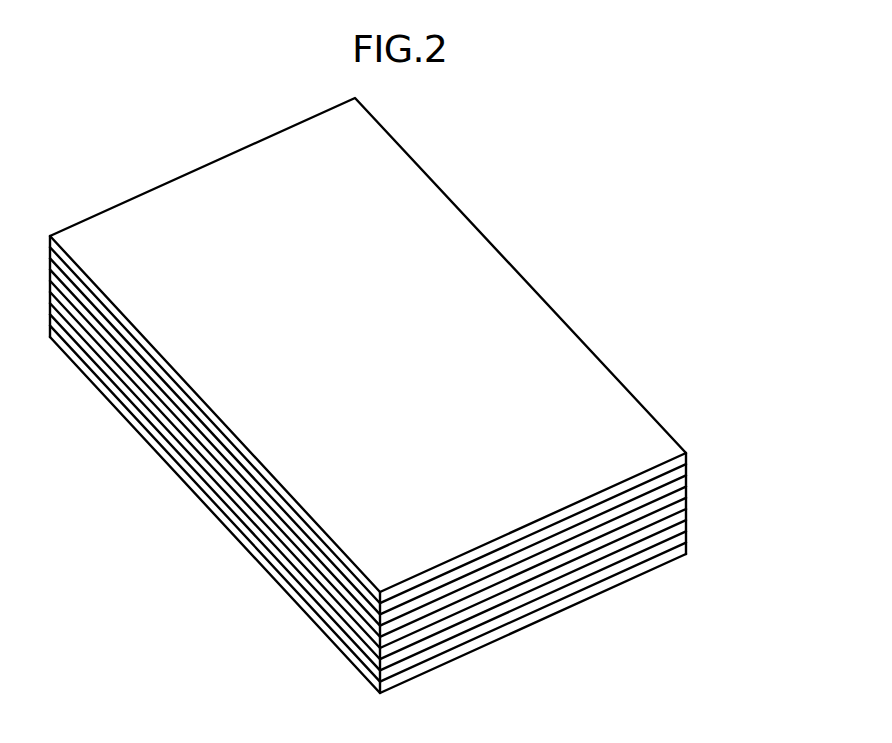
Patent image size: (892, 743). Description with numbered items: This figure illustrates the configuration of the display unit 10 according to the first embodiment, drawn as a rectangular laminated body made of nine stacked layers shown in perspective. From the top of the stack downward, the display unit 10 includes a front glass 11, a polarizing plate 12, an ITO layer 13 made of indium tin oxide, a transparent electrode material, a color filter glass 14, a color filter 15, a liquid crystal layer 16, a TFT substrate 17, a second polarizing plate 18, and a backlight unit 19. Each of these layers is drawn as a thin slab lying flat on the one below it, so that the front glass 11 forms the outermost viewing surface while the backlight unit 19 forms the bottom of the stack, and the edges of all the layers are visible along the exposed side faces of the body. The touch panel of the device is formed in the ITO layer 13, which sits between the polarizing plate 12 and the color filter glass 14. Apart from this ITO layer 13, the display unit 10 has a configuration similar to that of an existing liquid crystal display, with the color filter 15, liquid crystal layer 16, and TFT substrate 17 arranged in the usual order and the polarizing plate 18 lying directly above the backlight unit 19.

The display unit 10 is at (425, 400).
The front glass 11 is at (687, 459).
The polarizing plate 12 is at (687, 470).
The ITO layer 13 is at (687, 481).
The color filter glass 14 is at (687, 492).
The color filter 15 is at (687, 503).
The liquid crystal layer 16 is at (687, 514).
The TFT substrate 17 is at (687, 525).
The polarizing plate 18 is at (687, 536).
The backlight unit 19 is at (687, 547).